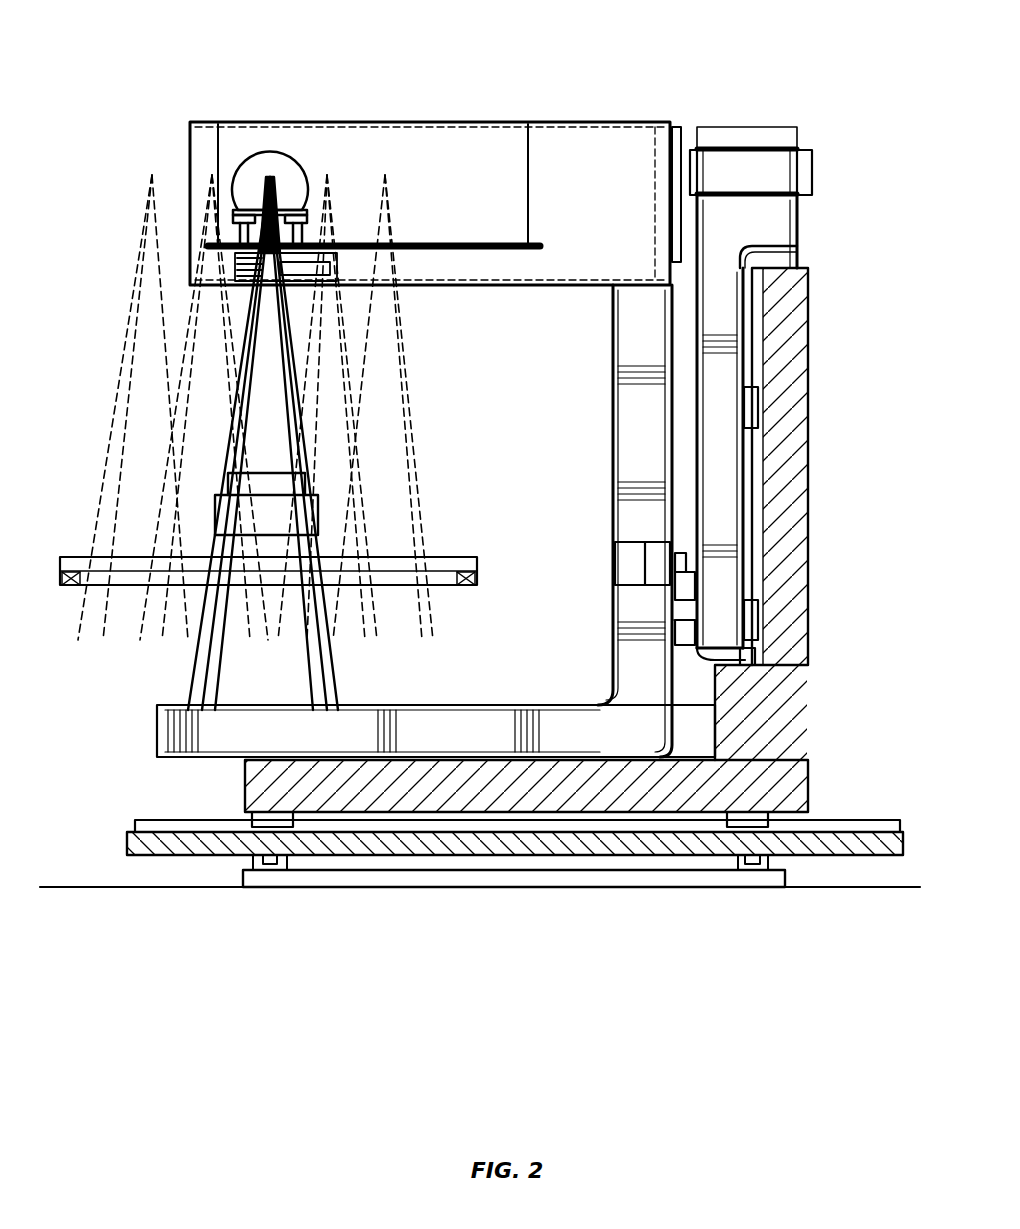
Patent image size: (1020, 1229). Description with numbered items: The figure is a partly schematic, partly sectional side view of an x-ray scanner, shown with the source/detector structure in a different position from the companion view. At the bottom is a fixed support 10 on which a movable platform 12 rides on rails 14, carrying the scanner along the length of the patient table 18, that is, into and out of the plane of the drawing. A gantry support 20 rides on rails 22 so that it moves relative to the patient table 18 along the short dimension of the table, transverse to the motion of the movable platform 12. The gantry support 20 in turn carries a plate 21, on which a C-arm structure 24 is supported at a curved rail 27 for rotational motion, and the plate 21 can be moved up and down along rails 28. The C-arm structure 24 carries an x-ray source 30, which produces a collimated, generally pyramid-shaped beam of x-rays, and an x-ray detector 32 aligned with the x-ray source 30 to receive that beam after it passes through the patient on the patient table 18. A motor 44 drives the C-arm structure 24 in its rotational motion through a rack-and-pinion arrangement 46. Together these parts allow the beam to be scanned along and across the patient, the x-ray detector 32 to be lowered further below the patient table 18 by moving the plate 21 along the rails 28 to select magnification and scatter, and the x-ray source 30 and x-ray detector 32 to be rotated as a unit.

The fixed support 10 is at (505, 882).
The movable platform 12 is at (893, 843).
The rails 14 is at (245, 868).
The patient table 18 is at (455, 558).
The gantry support 20 is at (780, 688).
The plate 21 is at (722, 478).
The rails 22 is at (312, 828).
The C-arm structure 24 is at (645, 340).
The curved rail 27 is at (740, 656).
The rails 28 is at (748, 408).
The x-ray source 30 is at (296, 152).
The x-ray detector 32 is at (258, 705).
The motor 44 is at (625, 545).
The rack-and-pinion arrangement 46 is at (690, 560).